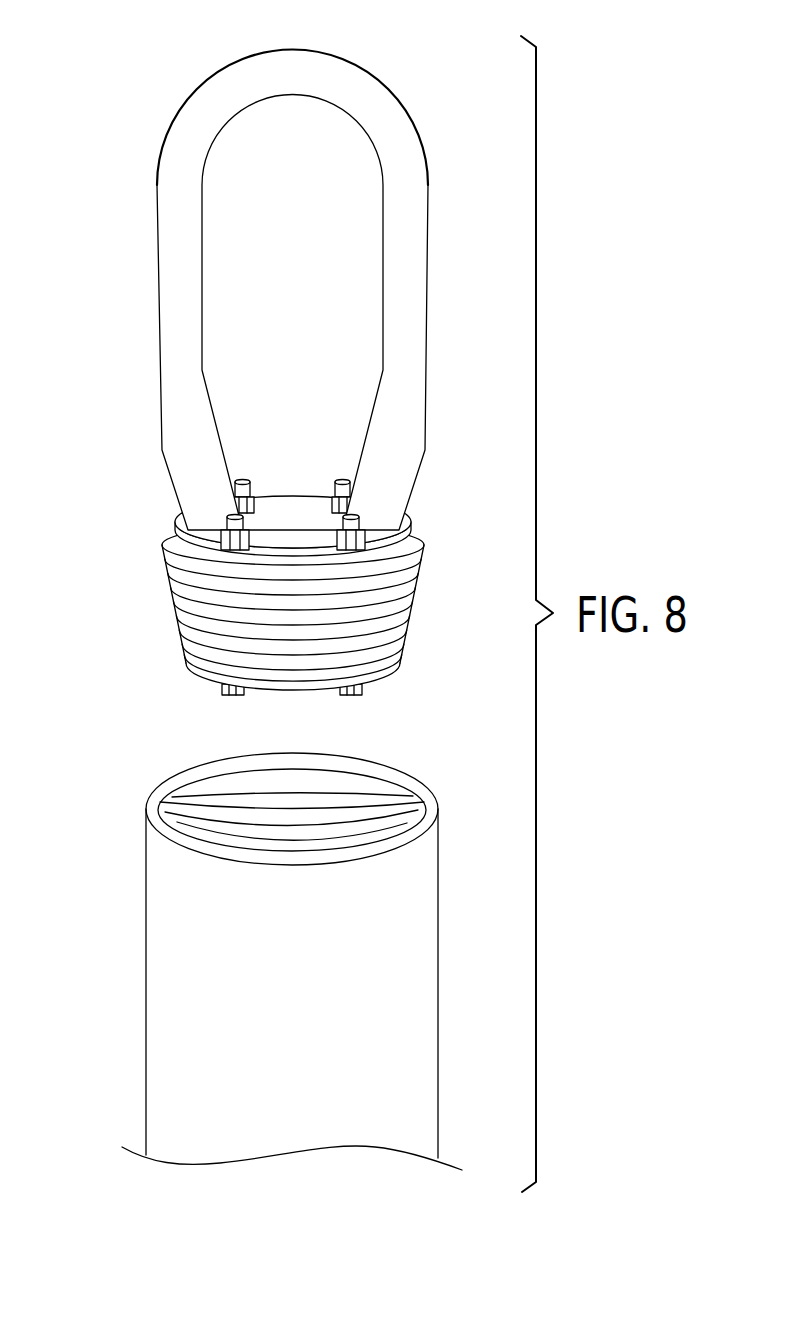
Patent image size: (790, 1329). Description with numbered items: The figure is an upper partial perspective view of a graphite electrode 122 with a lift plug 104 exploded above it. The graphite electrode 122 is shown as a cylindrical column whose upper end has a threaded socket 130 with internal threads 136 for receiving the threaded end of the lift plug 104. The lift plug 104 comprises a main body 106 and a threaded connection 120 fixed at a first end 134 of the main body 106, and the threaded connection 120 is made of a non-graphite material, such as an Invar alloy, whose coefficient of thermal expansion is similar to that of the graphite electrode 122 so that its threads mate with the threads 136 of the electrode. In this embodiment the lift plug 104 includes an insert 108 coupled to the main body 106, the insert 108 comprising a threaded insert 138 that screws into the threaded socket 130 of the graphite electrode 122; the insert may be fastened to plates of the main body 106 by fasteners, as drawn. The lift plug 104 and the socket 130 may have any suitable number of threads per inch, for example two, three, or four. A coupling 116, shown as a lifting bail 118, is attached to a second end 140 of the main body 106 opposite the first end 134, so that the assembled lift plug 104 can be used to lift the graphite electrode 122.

The lift plug 104 is at (273, 279).
The lifting component 116 is at (192, 118).
The lifting bail 118 is at (180, 175).
The second end 140 is at (286, 378).
The main body 106 is at (390, 542).
The insert 108 is at (253, 627).
The threaded insert 138 is at (192, 622).
The first end 134 is at (185, 689).
The threaded connection 120 is at (297, 605).
The threaded socket 130 is at (276, 940).
The threads 136 is at (161, 770).
The graphite electrode 122 is at (310, 1013).